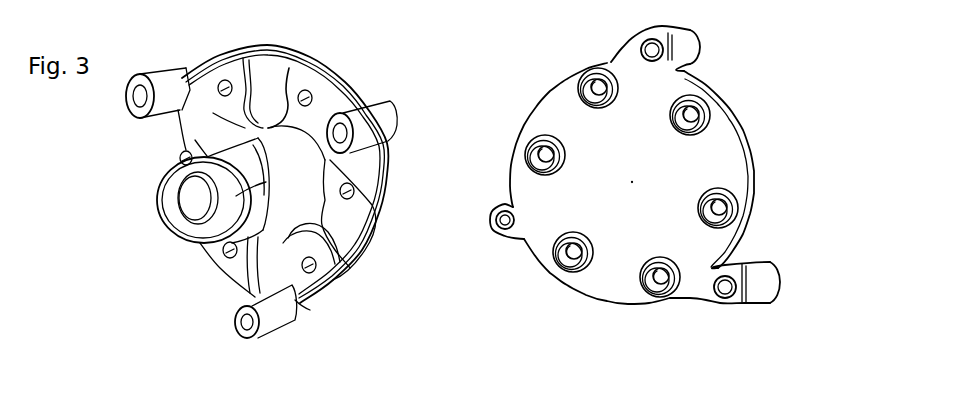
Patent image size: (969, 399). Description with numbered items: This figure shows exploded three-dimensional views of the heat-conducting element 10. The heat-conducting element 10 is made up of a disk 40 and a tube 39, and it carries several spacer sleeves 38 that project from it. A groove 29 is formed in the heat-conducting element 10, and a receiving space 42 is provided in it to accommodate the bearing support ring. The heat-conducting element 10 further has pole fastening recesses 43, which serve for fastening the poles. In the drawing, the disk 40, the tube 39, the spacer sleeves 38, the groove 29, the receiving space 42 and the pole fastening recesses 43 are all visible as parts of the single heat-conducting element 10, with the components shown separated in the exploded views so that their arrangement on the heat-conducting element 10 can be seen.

The heat-conducting element 10 is at (347, 73).
The groove 29 is at (240, 200).
The spacer sleeves 38 is at (140, 108).
The tube 39 is at (157, 200).
The disk 40 is at (297, 312).
The receiving space 42 is at (178, 224).
The pole fastening recesses 43 is at (223, 84).